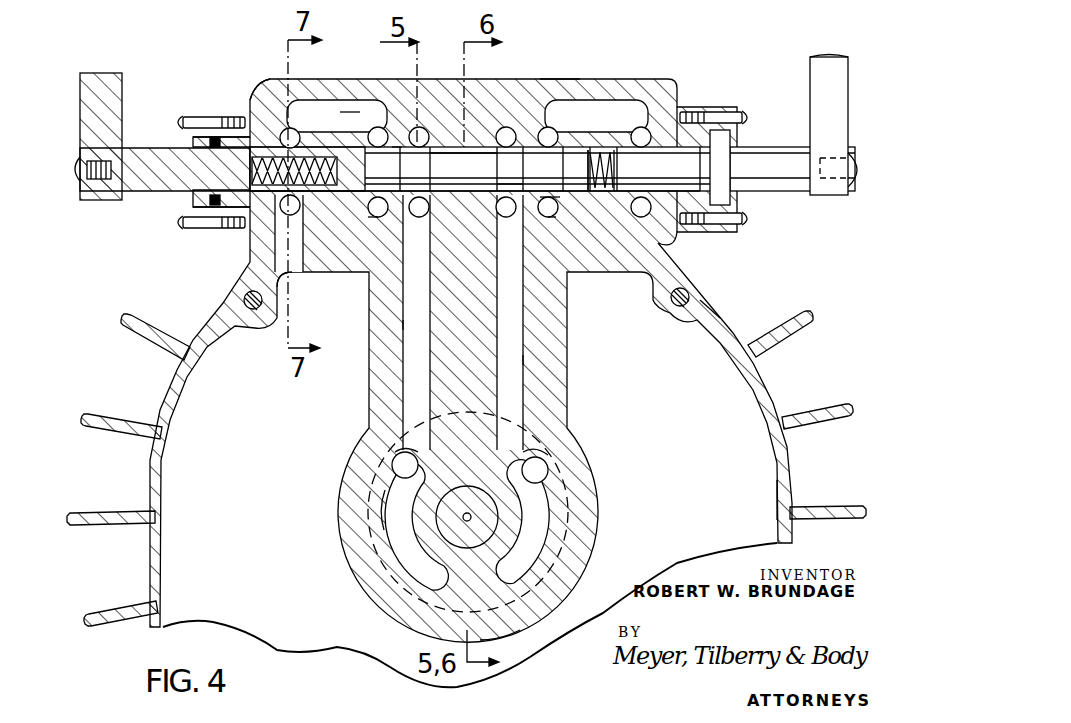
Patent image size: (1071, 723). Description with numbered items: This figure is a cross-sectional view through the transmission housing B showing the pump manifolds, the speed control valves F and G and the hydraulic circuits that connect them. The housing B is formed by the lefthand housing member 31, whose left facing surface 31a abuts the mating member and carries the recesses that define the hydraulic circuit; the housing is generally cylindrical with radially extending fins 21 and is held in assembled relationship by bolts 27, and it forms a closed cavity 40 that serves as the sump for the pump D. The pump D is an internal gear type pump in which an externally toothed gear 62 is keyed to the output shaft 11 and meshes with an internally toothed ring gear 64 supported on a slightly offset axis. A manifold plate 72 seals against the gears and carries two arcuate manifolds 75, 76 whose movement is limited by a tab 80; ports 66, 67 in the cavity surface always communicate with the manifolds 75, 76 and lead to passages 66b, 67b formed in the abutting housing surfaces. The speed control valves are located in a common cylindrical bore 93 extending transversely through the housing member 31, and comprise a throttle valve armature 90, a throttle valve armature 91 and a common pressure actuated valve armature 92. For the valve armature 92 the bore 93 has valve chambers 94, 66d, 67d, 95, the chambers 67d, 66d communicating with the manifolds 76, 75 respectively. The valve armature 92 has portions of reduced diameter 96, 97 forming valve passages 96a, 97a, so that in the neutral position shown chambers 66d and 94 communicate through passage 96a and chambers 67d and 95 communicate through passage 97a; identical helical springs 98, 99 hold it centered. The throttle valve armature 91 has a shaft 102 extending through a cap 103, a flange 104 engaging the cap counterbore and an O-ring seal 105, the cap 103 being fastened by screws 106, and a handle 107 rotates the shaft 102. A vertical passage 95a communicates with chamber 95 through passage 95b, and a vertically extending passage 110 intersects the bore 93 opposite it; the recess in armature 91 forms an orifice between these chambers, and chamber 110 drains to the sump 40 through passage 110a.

The lefthand housing member 31 is at (640, 78).
The left facing surface 31a is at (707, 300).
The closed cavity 40 is at (760, 478).
The radially extending fins 21 is at (118, 417).
The bolts 27 is at (683, 306).
The handle 107 is at (113, 97).
The shaft 102 is at (165, 186).
The cap 103 is at (192, 143).
The flange 104 is at (200, 117).
The O-ring seal 105 is at (210, 117).
The screws 106 is at (183, 229).
The throttle valve armature 91 is at (243, 135).
The throttle valve armature 90 is at (672, 150).
The helical spring 99 is at (318, 192).
The helical spring 98 is at (617, 197).
The speed control valve G is at (320, 125).
The valve passage 96a is at (527, 143).
The vertical passage 95a is at (290, 118).
The passage 95b is at (342, 110).
The valve chamber 95 is at (373, 205).
The valve passage 97a is at (397, 143).
The portion of reduced diameter 97 is at (418, 170).
The pressure actuated valve armature 92 is at (477, 157).
The portion of reduced diameter 96 is at (507, 184).
The cylindrical bore 93 is at (551, 205).
The valve chamber 94 is at (552, 212).
The vertically extending passage 110 is at (283, 203).
The passage 110a is at (293, 275).
The valve chamber 67d is at (422, 205).
The valve chamber 66d is at (507, 205).
The passage 67b is at (405, 320).
The passage 66b is at (518, 360).
The port 66 is at (532, 490).
The port 67 is at (395, 452).
The internally toothed ring gear 64 is at (553, 492).
The externally toothed gear 62 is at (392, 462).
The arcuate manifold 75 is at (572, 482).
The arcuate manifold 76 is at (385, 503).
The manifold plate 72 is at (598, 548).
The output shaft 11 is at (467, 553).
The tab 80 is at (503, 640).
The constant displacement pump D is at (385, 556).
The housing B is at (560, 76).
The speed control valve F is at (604, 147).